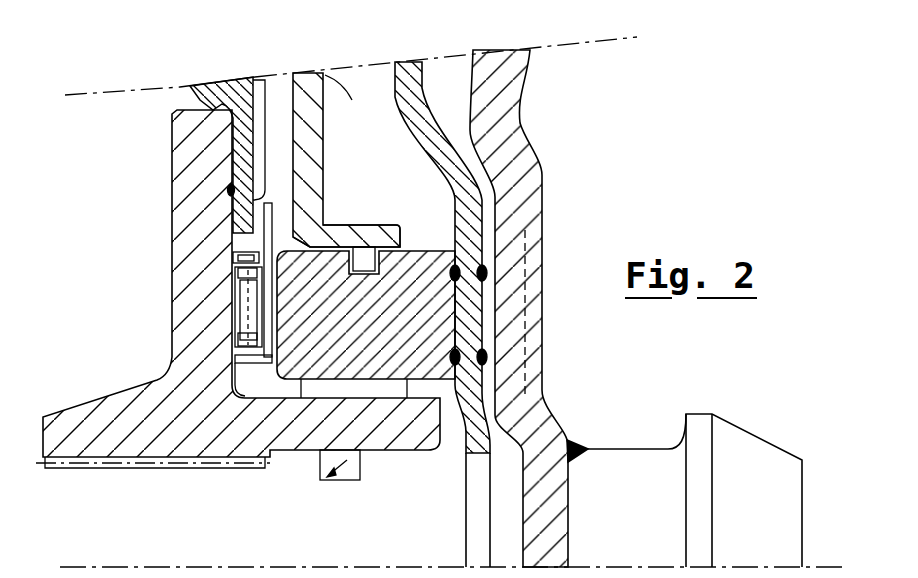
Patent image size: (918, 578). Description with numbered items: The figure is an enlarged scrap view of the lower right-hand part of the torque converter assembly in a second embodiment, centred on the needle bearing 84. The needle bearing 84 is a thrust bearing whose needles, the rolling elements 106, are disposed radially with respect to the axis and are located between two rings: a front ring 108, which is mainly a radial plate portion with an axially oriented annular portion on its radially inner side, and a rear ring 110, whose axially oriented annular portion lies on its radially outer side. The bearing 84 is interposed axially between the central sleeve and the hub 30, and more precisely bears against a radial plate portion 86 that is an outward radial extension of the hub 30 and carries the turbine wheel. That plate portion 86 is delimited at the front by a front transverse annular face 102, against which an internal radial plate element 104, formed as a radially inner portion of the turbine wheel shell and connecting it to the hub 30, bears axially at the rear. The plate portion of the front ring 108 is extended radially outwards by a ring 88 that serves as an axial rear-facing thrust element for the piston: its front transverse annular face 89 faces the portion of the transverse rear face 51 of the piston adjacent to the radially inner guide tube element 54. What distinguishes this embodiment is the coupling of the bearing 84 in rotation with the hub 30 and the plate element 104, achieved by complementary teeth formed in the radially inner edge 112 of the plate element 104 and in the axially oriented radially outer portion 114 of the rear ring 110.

The hub 30 is at (176, 474).
The transverse rear face 51 is at (283, 158).
The radially inner guide tube element 54 is at (389, 225).
The needle bearing 84 is at (253, 372).
The radial plate portion 86 is at (150, 200).
The ring 88 is at (266, 192).
The front transverse annular face 89 is at (283, 248).
The front transverse annular face 102 is at (247, 157).
The internal radial plate element 104 is at (251, 140).
The rolling elements 106 is at (247, 319).
The front ring 108 is at (278, 336).
The rear ring 110 is at (235, 302).
The radially inner edge 112 is at (297, 243).
The axially oriented radially outer portion 114 is at (233, 254).